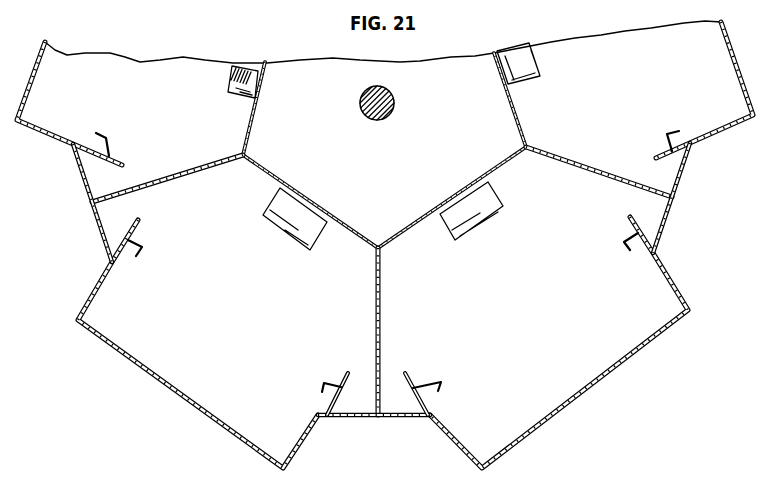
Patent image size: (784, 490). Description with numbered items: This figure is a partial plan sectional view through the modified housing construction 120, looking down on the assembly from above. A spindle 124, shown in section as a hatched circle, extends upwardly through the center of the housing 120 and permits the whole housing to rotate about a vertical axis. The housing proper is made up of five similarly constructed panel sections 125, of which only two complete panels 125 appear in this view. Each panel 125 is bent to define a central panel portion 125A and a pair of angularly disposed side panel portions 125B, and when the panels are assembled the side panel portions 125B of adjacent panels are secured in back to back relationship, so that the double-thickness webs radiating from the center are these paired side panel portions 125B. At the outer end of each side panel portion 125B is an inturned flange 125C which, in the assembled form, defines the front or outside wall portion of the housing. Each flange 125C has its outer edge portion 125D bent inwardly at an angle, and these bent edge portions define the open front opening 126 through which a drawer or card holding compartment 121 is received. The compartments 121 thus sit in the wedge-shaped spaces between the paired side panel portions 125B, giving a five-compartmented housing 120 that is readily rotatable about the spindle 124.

The housing construction 120 is at (409, 300).
The card holding compartment 121 is at (170, 388).
The spindle 124 is at (390, 92).
The panel section 125 is at (258, 117).
The central panel portion 125A is at (268, 84).
The side panel portion 125B is at (175, 172).
The inturned flange 125C is at (353, 419).
The outer edge portion 125D is at (347, 374).
The open front opening 126 is at (140, 222).